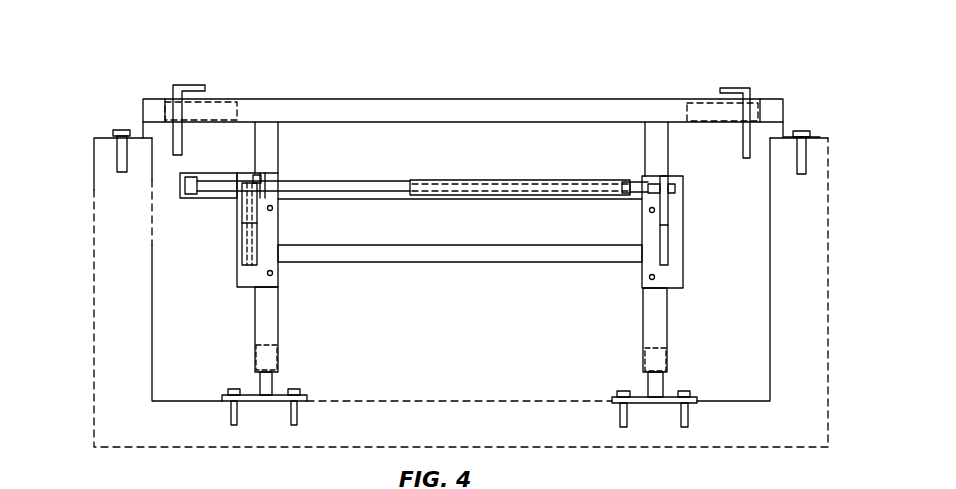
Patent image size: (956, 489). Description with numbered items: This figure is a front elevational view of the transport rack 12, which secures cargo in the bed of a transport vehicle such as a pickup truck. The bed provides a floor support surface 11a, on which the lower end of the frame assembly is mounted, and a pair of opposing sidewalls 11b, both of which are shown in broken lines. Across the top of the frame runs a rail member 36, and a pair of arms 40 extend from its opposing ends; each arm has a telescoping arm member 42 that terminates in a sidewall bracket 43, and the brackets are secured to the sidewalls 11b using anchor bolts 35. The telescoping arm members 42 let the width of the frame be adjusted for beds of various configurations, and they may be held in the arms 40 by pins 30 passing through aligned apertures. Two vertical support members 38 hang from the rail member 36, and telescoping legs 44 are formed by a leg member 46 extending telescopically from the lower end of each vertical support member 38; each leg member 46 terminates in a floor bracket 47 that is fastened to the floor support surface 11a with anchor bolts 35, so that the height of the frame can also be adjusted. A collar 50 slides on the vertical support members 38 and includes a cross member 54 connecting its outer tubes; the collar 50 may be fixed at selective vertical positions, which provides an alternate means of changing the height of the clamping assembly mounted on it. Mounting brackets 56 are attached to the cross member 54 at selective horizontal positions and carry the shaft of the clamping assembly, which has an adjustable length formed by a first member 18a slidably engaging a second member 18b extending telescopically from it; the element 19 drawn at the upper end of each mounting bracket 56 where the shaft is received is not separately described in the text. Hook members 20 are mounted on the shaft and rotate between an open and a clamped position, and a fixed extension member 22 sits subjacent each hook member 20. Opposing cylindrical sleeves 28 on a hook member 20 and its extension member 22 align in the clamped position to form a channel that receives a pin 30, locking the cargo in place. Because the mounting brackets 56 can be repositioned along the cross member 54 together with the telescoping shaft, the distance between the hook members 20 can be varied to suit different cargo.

The floor support surface 11a is at (438, 412).
The sidewalls 11b is at (857, 252).
The transport rack 12 is at (463, 64).
The first member 18a is at (380, 184).
The second member 18b is at (527, 181).
The pin 19 is at (264, 174).
The hook members 20 is at (256, 178).
The fixed extension member 22 is at (258, 256).
The cylindrical sleeves 28 is at (242, 214).
The pin 30 is at (192, 85).
The anchor bolts 35 is at (115, 156).
The rail member 36 is at (466, 110).
The vertical support members 38 is at (268, 314).
The arms 40 is at (215, 80).
The telescoping arm members 42 is at (150, 104).
The sidewall brackets 43 is at (140, 130).
The telescoping legs 44 is at (456, 345).
The leg member 46 is at (258, 386).
The floor brackets 47 is at (282, 395).
The collar 50 is at (513, 266).
The cross member 54 is at (460, 273).
The mounting brackets 56 is at (280, 225).